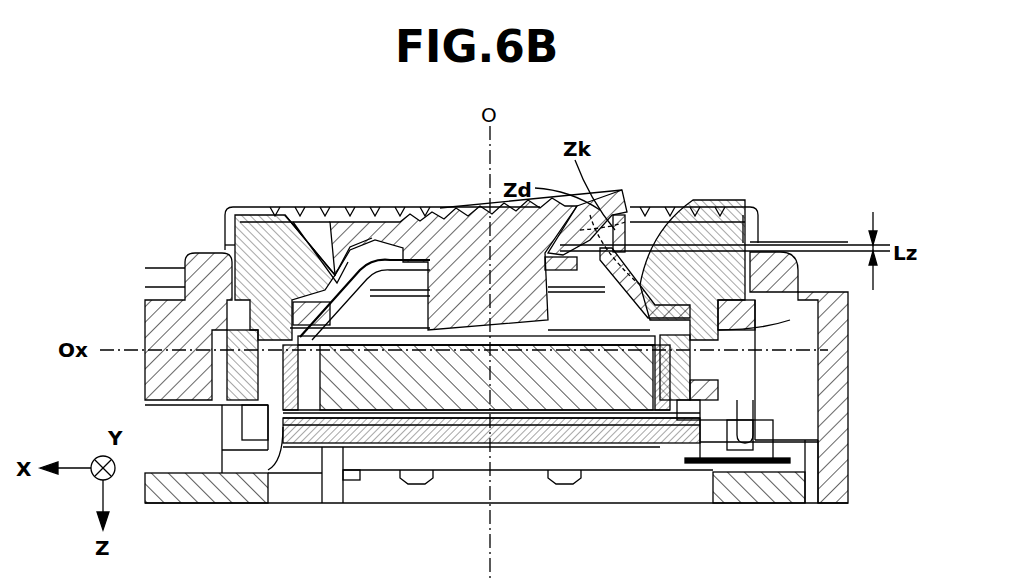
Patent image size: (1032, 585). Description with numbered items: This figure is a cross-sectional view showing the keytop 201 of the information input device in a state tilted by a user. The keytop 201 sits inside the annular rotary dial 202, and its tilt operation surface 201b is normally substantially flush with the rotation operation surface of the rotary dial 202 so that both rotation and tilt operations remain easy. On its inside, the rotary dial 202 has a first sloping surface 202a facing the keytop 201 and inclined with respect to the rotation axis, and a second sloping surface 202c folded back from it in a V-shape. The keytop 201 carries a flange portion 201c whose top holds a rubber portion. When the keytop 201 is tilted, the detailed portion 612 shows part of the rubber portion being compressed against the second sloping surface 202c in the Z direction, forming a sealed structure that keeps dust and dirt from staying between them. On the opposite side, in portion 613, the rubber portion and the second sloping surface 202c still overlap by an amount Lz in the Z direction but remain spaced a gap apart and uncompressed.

The keytop 201 is at (450, 224).
The tilt operation surface 201b is at (320, 265).
The flange portion 201c is at (378, 240).
The rotary dial 202 is at (735, 215).
The first sloping surface 202a is at (690, 240).
The second sloping surface 202c is at (315, 280).
The detailed portion 612 is at (225, 222).
The portion 613 is at (640, 245).